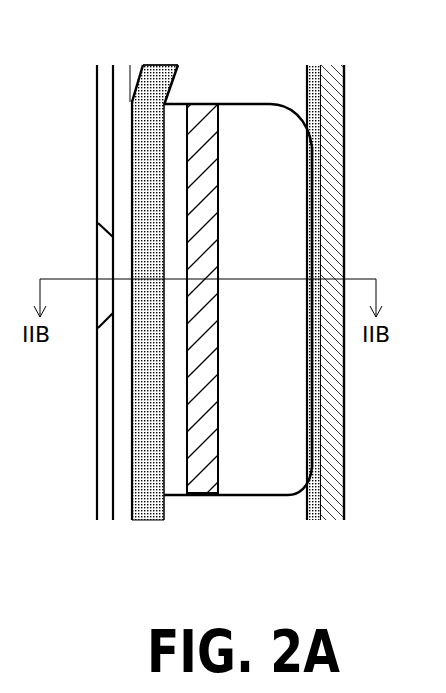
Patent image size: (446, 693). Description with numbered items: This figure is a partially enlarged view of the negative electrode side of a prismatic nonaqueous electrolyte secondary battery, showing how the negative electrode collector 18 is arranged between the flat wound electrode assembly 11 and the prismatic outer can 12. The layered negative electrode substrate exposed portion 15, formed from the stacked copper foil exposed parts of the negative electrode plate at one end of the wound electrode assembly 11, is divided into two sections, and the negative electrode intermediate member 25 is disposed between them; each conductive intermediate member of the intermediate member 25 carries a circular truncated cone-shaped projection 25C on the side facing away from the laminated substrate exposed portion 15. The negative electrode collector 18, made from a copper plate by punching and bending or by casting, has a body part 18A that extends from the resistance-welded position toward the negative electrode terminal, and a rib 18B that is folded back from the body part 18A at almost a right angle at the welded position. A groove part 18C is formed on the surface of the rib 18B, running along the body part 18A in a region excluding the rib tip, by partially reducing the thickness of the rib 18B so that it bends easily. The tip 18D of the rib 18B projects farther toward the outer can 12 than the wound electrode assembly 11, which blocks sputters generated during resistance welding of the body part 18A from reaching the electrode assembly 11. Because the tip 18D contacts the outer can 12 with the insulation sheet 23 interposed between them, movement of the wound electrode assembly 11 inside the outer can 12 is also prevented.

The flat wound electrode assembly 11 is at (265, 507).
The prismatic outer can 12 is at (335, 456).
The layered negative electrode substrate exposed portion 15 is at (122, 68).
The negative electrode collector 18 is at (129, 152).
The body part 18A is at (142, 123).
The rib 18B is at (280, 123).
The groove part 18C is at (205, 111).
The tip of the rib 18D is at (316, 148).
The insulation sheet 23 is at (316, 506).
The negative electrode intermediate member 25 is at (90, 471).
The circular truncated cone-shaped projection 25C is at (104, 245).